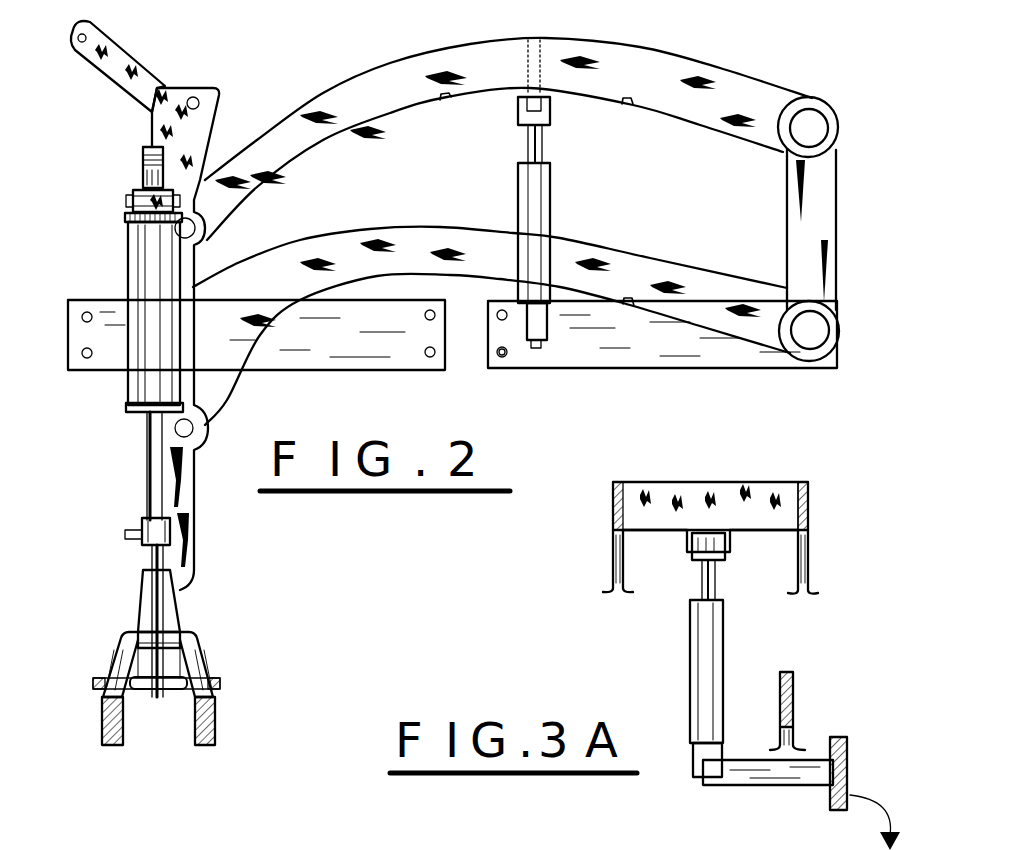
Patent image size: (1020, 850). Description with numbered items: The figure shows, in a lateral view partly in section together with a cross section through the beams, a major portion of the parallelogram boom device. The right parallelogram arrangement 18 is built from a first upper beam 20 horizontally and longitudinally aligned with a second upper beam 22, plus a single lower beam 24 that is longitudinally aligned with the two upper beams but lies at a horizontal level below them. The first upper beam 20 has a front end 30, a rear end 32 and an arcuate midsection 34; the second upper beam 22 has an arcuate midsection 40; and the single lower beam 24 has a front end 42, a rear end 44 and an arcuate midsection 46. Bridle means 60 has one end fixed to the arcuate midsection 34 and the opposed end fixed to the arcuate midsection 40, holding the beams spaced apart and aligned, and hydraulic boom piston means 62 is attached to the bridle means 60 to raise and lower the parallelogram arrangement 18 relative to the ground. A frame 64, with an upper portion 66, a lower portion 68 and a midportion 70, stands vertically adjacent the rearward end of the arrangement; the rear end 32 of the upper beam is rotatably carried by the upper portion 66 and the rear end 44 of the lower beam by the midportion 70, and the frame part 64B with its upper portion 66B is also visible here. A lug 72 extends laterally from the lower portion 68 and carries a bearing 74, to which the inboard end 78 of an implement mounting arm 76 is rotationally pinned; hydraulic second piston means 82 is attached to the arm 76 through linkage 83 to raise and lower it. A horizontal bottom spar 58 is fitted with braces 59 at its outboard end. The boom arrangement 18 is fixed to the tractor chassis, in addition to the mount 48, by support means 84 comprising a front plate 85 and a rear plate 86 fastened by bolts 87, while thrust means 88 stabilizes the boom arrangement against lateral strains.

In FIG. 2, the right parallelogram arrangement 18 is at (757, 40).
In FIG. 2, the first upper beam 20 is at (617, 45).
In FIG. 3A, the first upper beam 20 is at (615, 568).
In FIG. 3A, the second upper beam 22 is at (807, 577).
In FIG. 2, the single lower beam 24 is at (578, 252).
In FIG. 3A, the single lower beam 24 is at (790, 672).
In FIG. 2, the front end 30 is at (777, 98).
In FIG. 2, the rear end 32 is at (230, 163).
In FIG. 2, the arcuate midsection 34 is at (487, 57).
In FIG. 3A, the arcuate midsection 34 is at (613, 503).
In FIG. 3A, the arcuate midsection 40 is at (807, 518).
In FIG. 2, the front end 42 is at (722, 238).
In FIG. 2, the rear end 44 is at (215, 380).
In FIG. 2, the arcuate midsection 46 is at (393, 230).
In FIG. 3A, the mount 48 is at (832, 798).
In FIG. 2, the horizontal bottom spar 58 is at (810, 325).
In FIG. 2, the braces 59 is at (800, 227).
In FIG. 3A, the bridle means 60 is at (718, 458).
In FIG. 2, the hydraulic boom piston means 62 is at (585, 183).
In FIG. 3A, the hydraulic boom piston means 62 is at (657, 690).
In FIG. 2, the frame 64 is at (108, 135).
In FIG. 2, the part of the frame 64B is at (177, 505).
In FIG. 2, the upper portion 66 is at (143, 180).
In FIG. 2, the upper portion 66B is at (205, 218).
In FIG. 2, the lower portion 68 is at (175, 578).
In FIG. 2, the midportion 70 is at (196, 285).
In FIG. 2, the lug 72 is at (137, 618).
In FIG. 2, the bearing 74 is at (182, 630).
In FIG. 2, the implement mounting arm 76 is at (280, 693).
In FIG. 2, the inboard end 78 is at (102, 667).
In FIG. 2, the hydraulic second piston means 82 is at (98, 275).
In FIG. 2, the linkage 83 is at (128, 562).
In FIG. 2, the support means 84 is at (547, 405).
In FIG. 2, the front plate 85 is at (642, 350).
In FIG. 3A, the front plate 85 is at (847, 767).
In FIG. 2, the rear plate 86 is at (333, 353).
In FIG. 2, the bolts 87 is at (493, 352).
In FIG. 2, the thrust means 88 is at (148, 25).